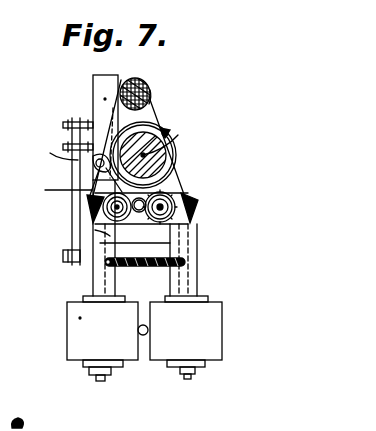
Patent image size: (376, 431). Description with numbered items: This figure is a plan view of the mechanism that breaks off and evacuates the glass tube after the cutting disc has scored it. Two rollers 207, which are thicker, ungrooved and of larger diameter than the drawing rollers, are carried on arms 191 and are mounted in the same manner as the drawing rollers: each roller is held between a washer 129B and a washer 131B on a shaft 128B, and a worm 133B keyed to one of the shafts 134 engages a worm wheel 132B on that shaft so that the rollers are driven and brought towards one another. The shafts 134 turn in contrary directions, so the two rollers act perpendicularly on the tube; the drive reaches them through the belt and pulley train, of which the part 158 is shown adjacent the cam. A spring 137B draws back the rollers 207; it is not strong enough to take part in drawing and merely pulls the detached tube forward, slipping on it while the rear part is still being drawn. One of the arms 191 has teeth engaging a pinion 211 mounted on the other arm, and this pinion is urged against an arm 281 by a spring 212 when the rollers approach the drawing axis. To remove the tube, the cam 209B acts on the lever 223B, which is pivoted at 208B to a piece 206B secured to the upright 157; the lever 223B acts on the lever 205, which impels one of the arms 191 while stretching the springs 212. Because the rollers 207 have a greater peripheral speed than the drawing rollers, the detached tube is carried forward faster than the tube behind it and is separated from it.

The cam 209B is at (138, 80).
The belt 158 is at (152, 98).
The lever 223B is at (104, 99).
The pivot 208B is at (64, 127).
The lever 205 is at (50, 153).
The piece 206B is at (93, 170).
The spring 212 is at (52, 190).
The worm wheel 132B is at (88, 208).
The arm 281 is at (100, 218).
The pinion 211 is at (96, 233).
The spring 137B is at (63, 258).
The arms 191 is at (92, 280).
The shaft 128B is at (92, 298).
The washer 129B is at (122, 280).
The rollers 207 is at (80, 318).
The washer 131B is at (116, 366).
The upright 157 is at (170, 146).
The shafts 134 is at (178, 172).
The worm 133B is at (196, 207).